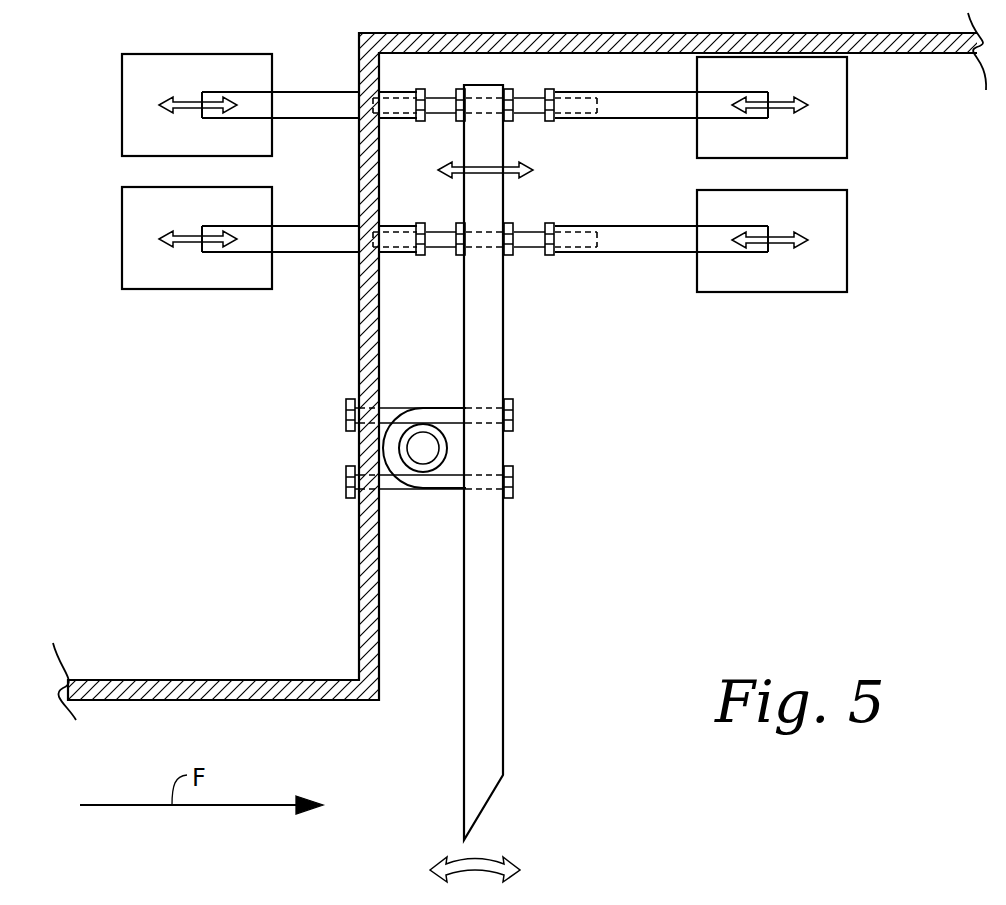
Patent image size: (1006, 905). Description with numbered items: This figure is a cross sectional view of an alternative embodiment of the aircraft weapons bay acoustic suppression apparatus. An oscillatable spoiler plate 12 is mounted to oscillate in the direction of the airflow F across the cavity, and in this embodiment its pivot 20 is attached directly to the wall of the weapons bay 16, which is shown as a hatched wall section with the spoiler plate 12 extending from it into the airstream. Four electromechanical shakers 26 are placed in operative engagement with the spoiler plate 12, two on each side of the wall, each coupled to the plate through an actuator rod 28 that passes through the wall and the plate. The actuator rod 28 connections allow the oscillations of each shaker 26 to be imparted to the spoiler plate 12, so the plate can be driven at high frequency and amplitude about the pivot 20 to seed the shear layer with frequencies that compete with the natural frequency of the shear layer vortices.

The spoiler plate 12 is at (503, 605).
The weapons bay 16 is at (379, 672).
The pivot 20 is at (511, 445).
The electromechanical shaker 26 is at (122, 112).
The actuator rod 28 is at (311, 118).